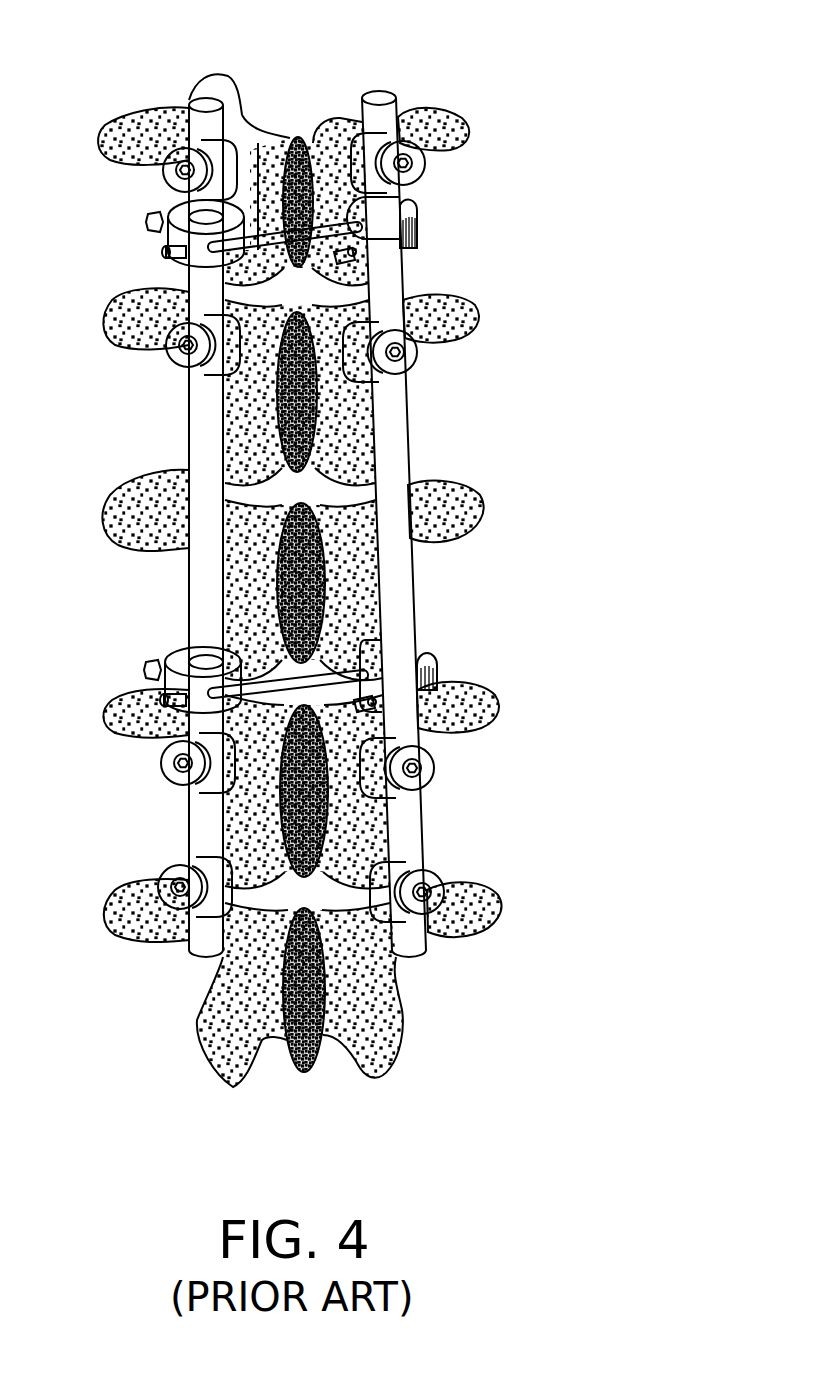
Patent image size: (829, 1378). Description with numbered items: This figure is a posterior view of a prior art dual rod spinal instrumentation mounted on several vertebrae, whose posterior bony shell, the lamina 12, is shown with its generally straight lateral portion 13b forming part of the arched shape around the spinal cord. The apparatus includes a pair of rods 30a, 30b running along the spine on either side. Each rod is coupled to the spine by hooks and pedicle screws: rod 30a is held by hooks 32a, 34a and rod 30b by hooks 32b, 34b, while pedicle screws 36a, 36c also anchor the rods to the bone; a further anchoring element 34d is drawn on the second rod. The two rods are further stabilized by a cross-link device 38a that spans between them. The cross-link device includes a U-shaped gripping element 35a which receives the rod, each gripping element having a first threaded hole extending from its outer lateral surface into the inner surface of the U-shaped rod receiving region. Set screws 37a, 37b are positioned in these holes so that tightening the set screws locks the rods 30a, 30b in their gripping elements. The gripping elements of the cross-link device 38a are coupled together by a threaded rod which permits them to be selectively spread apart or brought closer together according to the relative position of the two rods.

The lamina 12 is at (277, 143).
The lateral portion 13b is at (235, 90).
The rod 30a is at (360, 88).
The rod 30b is at (210, 82).
The hook 32a is at (418, 162).
The hook 32b is at (163, 175).
The hook 34a is at (422, 890).
The hook 34b is at (180, 890).
The right lower-middle pedicle screw clamp 34d is at (430, 762).
The U-shaped gripping element 35a is at (408, 220).
The pedicle screw 36a is at (185, 348).
The pedicle screw 36c is at (178, 768).
The set screw 37a is at (360, 260).
The set screw 37b is at (150, 222).
The cross-link device 38a is at (185, 273).